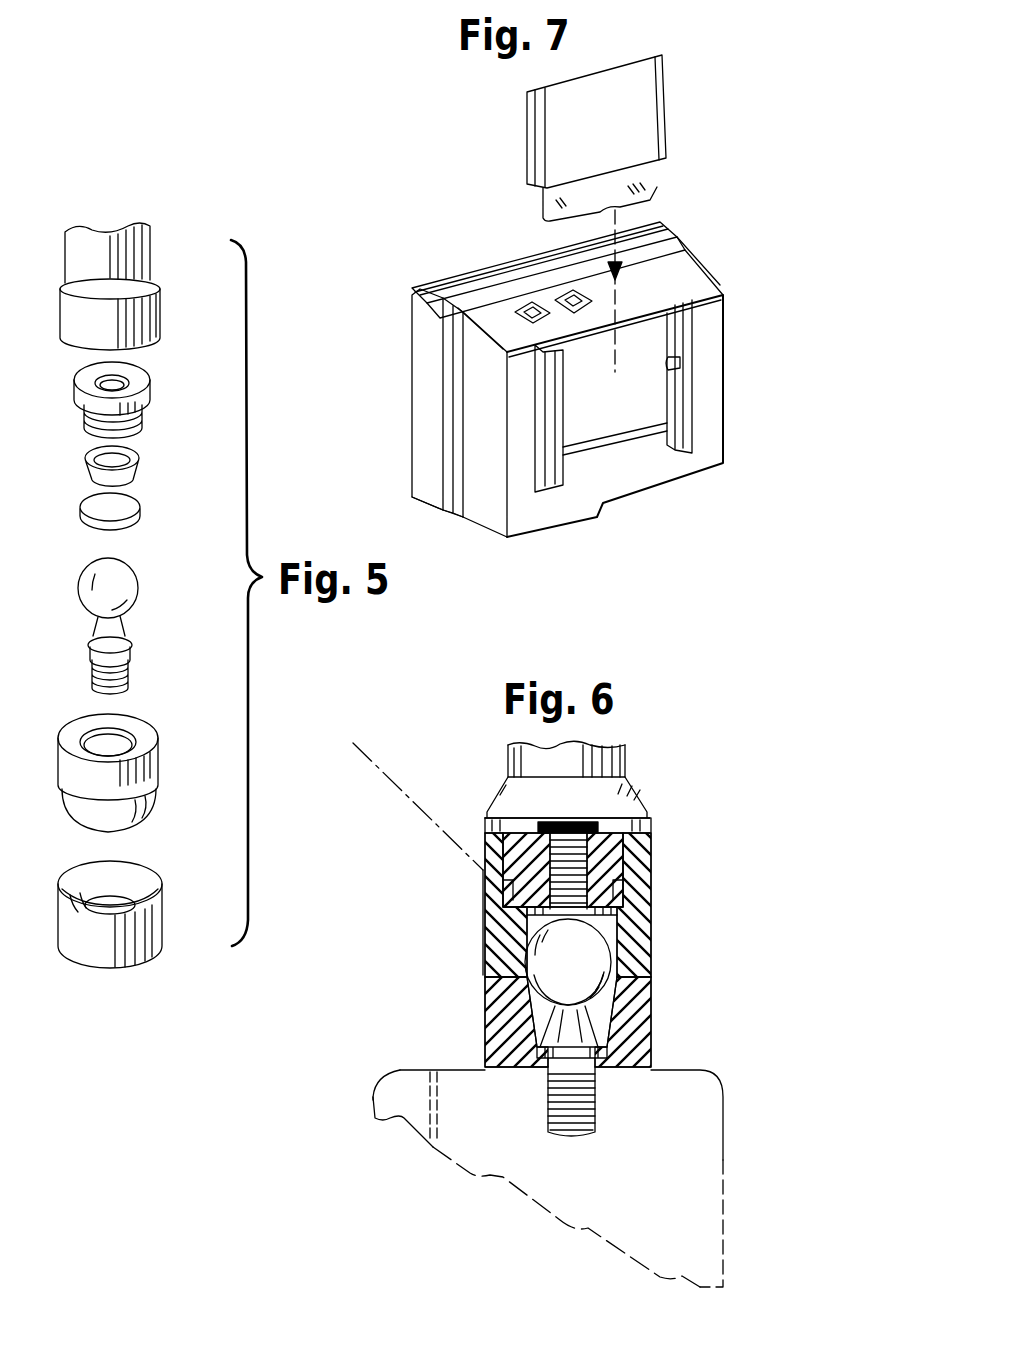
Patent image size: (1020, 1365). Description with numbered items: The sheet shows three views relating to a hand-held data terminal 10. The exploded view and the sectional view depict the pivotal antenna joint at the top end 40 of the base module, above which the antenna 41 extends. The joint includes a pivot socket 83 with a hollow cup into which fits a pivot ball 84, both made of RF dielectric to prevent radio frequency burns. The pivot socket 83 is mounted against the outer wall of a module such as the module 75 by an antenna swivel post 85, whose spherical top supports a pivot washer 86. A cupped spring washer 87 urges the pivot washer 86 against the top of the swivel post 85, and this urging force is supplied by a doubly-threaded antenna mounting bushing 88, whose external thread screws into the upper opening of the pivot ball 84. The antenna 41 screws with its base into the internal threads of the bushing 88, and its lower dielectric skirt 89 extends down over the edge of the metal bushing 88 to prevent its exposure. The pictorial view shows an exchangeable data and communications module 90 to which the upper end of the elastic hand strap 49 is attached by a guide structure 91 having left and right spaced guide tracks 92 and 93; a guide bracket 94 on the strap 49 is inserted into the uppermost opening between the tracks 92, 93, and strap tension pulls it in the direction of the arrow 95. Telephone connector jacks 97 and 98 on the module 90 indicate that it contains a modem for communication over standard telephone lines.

In FIG. 7, the data terminal 10 is at (398, 311).
In FIG. 6, the data terminal 10 is at (357, 1089).
In FIG. 6, the top end of the base module 40 is at (465, 1051).
In FIG. 5, the antenna 41 is at (160, 306).
In FIG. 6, the antenna 41 is at (620, 793).
In FIG. 7, the elastic hand strap 49 is at (650, 183).
In FIG. 6, the module 75 is at (702, 1097).
In FIG. 5, the pivot socket 83 is at (150, 892).
In FIG. 6, the pivot socket 83 is at (643, 1043).
In FIG. 5, the pivot ball 84 is at (152, 725).
In FIG. 6, the pivot ball 84 is at (623, 963).
In FIG. 5, the antenna swivel post 85 is at (140, 590).
In FIG. 6, the antenna swivel post 85 is at (607, 1028).
In FIG. 5, the pivot washer 86 is at (140, 510).
In FIG. 6, the pivot washer 86 is at (612, 943).
In FIG. 5, the cupped spring washer 87 is at (140, 459).
In FIG. 6, the cupped spring washer 87 is at (610, 905).
In FIG. 5, the antenna mounting bushing 88 is at (150, 400).
In FIG. 6, the antenna mounting bushing 88 is at (624, 857).
In FIG. 6, the lower dielectric skirt 89 is at (652, 826).
In FIG. 7, the data and communications module 90 is at (670, 472).
In FIG. 7, the guide structure 91 is at (612, 423).
In FIG. 7, the left guide track 92 is at (568, 433).
In FIG. 7, the right guide track 93 is at (674, 375).
In FIG. 7, the guide bracket 94 is at (645, 128).
In FIG. 7, the arrow 95 is at (665, 258).
In FIG. 7, the telephone connector jack 97 is at (527, 306).
In FIG. 7, the telephone connector jack 98 is at (572, 296).